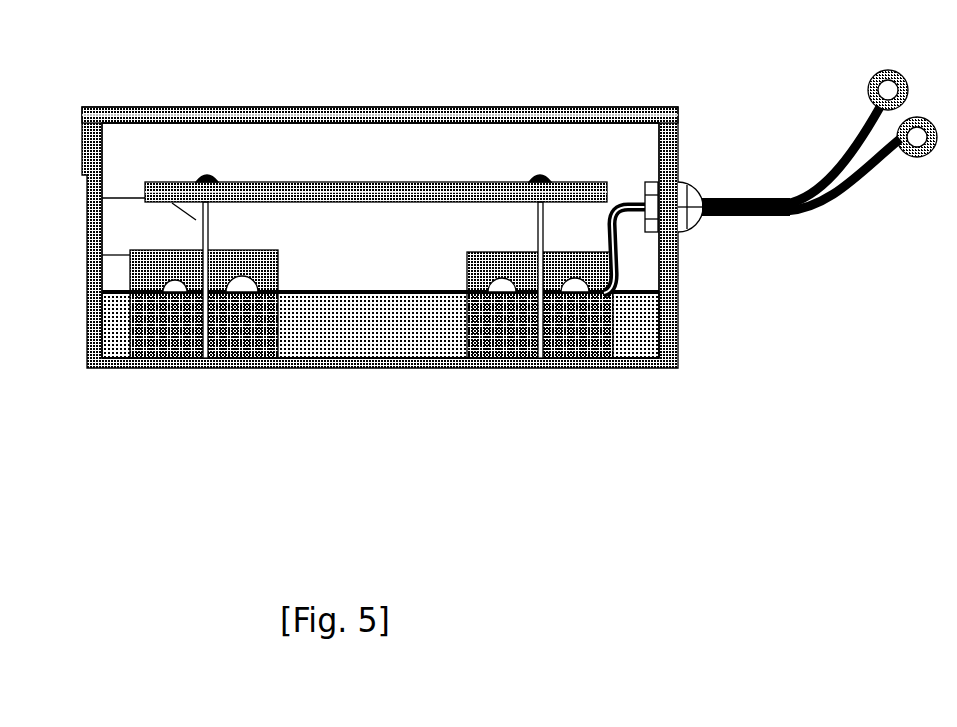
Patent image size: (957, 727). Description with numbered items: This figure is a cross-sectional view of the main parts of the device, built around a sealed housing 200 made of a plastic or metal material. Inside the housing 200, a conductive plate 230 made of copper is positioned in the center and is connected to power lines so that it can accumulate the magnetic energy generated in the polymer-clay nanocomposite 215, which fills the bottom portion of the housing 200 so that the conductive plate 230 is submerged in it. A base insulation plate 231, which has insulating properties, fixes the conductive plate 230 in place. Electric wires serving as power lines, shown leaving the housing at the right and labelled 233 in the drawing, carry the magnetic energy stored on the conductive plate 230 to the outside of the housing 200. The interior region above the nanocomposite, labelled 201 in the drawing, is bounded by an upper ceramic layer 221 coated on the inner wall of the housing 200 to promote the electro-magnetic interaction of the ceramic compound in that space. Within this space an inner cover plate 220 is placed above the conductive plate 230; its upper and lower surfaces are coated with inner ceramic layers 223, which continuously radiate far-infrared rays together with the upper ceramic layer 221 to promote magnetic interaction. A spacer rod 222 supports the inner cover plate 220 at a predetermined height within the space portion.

The sealed housing 200 is at (415, 106).
The accommodation space 201 is at (165, 150).
The polymer-clay nanocomposite 215 is at (432, 345).
The inner cover plate 220 is at (292, 178).
The upper ceramic layer 221 is at (517, 106).
The spacer rod 222 is at (90, 208).
The inner ceramic layers 223 is at (347, 181).
The conductive plate 230 is at (330, 305).
The base insulation plate 231 is at (90, 262).
The output cable 233 is at (733, 217).